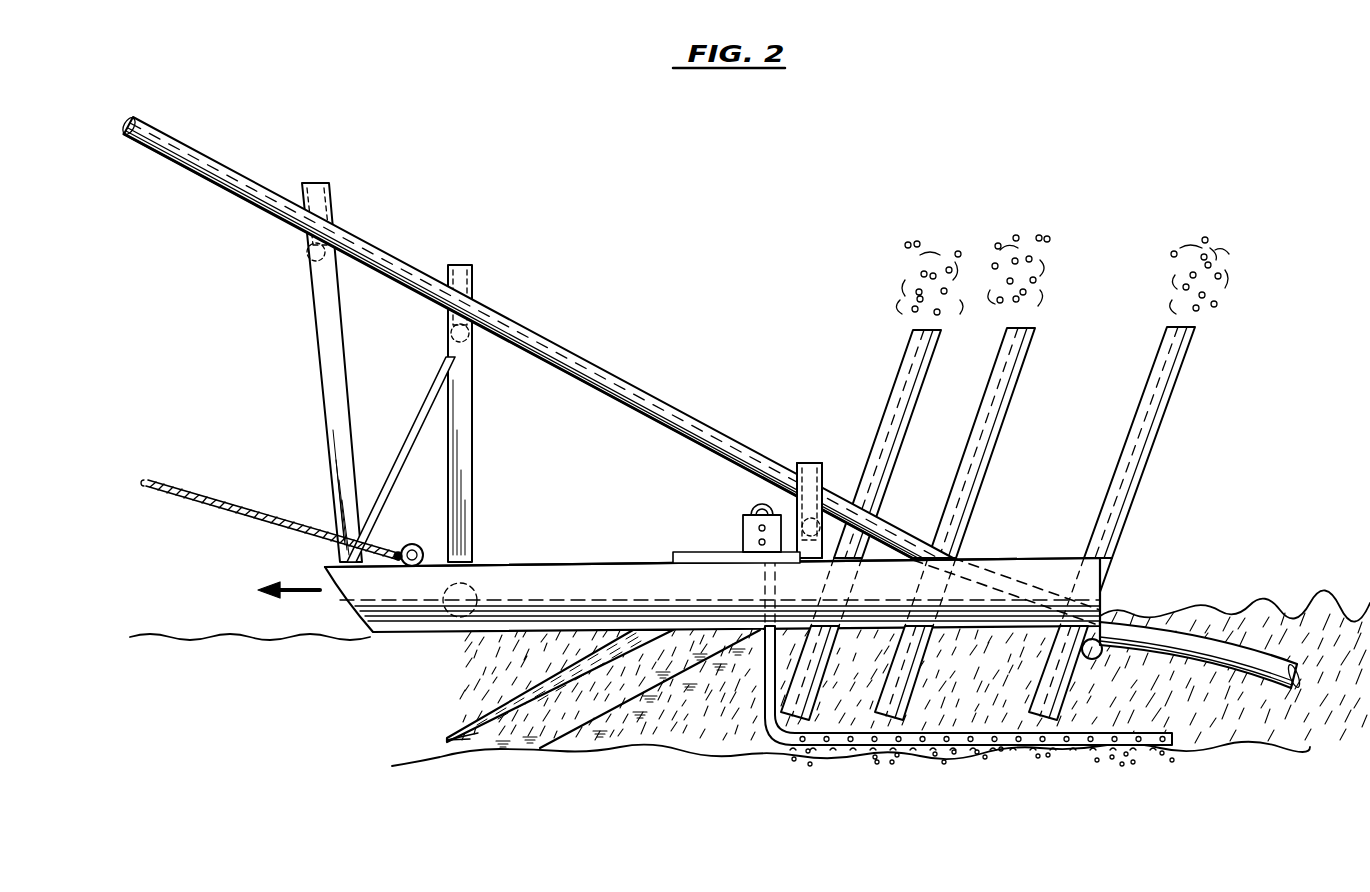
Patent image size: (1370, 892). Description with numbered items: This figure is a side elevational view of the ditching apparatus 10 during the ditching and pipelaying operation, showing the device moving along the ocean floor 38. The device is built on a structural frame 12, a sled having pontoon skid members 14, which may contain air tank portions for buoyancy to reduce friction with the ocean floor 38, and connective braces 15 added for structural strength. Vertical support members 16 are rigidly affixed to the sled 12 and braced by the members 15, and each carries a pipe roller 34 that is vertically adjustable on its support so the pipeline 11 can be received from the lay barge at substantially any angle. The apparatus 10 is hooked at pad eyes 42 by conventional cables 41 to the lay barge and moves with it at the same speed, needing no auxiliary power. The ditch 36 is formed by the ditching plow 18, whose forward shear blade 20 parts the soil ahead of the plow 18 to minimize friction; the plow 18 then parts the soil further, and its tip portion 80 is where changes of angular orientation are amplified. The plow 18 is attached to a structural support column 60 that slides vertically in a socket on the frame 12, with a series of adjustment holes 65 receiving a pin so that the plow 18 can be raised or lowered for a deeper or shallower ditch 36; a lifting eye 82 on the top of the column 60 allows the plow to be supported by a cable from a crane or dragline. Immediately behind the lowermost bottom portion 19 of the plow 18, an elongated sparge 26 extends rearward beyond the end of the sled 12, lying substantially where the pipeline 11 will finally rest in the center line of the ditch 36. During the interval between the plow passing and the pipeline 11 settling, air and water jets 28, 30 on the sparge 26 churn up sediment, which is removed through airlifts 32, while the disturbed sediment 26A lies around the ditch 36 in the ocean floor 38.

The ditching apparatus 10 is at (707, 366).
The pipeline 11 is at (576, 350).
The structural frame 12 is at (578, 556).
The pontoon skid member 14 is at (617, 594).
The connective brace 15 is at (426, 416).
The vertical support member 16 is at (337, 334).
The ditching plow 18 is at (632, 700).
The lowermost bottom portion of plow 19 is at (497, 750).
The shear blade 20 is at (560, 672).
The sparge 26 is at (830, 722).
The sediment deposit 26A is at (1218, 727).
The air jet 28 is at (950, 722).
The water jet 30 is at (1000, 722).
The airlift 32 is at (925, 388).
The pipe roller 34 is at (300, 258).
The ditch 36 is at (1299, 630).
The ocean floor 38 is at (255, 628).
The cable 41 is at (182, 494).
The pad eye 42 is at (405, 545).
The structural support column 60 is at (740, 526).
The adjustment hole 65 is at (746, 540).
The tip portion of plow 80 is at (445, 748).
The lifting eye 82 is at (757, 506).